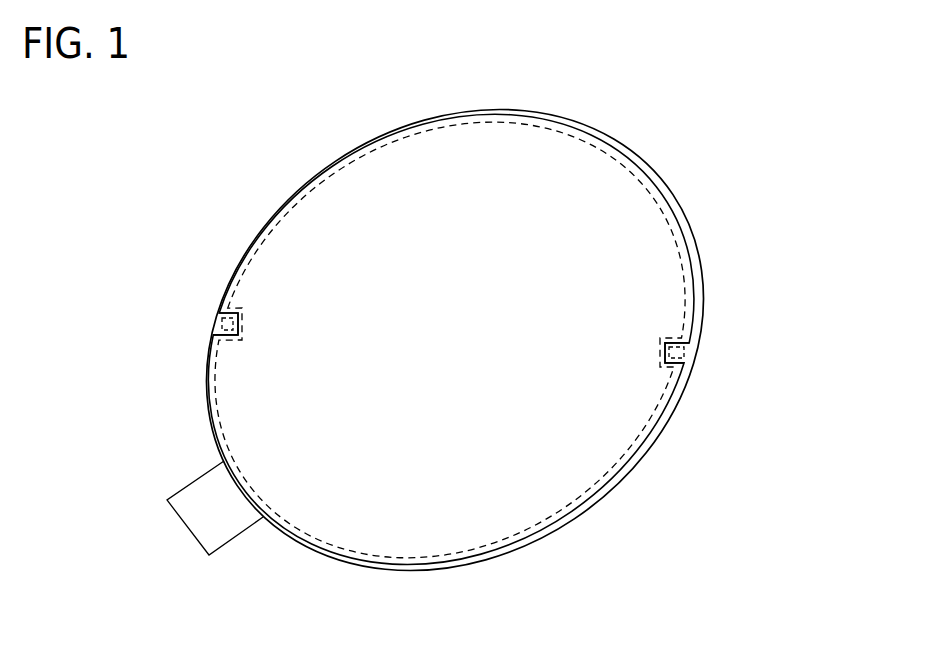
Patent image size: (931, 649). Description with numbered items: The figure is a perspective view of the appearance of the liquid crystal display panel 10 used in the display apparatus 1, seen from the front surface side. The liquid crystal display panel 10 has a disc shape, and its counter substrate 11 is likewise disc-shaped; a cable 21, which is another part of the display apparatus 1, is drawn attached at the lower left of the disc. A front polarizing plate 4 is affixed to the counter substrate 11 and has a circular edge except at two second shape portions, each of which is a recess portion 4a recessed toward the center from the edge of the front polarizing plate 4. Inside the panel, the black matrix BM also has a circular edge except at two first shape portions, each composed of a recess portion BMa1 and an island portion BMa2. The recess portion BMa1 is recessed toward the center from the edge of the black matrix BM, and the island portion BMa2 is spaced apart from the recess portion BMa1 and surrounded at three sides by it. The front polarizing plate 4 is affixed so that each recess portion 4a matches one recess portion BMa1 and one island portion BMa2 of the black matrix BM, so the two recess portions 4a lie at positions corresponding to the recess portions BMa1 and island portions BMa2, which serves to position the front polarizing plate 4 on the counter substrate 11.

The display apparatus 1 is at (780, 110).
The liquid crystal display panel 10 is at (634, 138).
The counter substrate 11 is at (701, 267).
The front polarizing plate 4 is at (657, 188).
The black matrix BM is at (285, 215).
The recess portion 4a is at (217, 324).
The recess portion BMa1 is at (451, 338).
The island portion BMa2 is at (451, 338).
The cable 21 is at (202, 522).